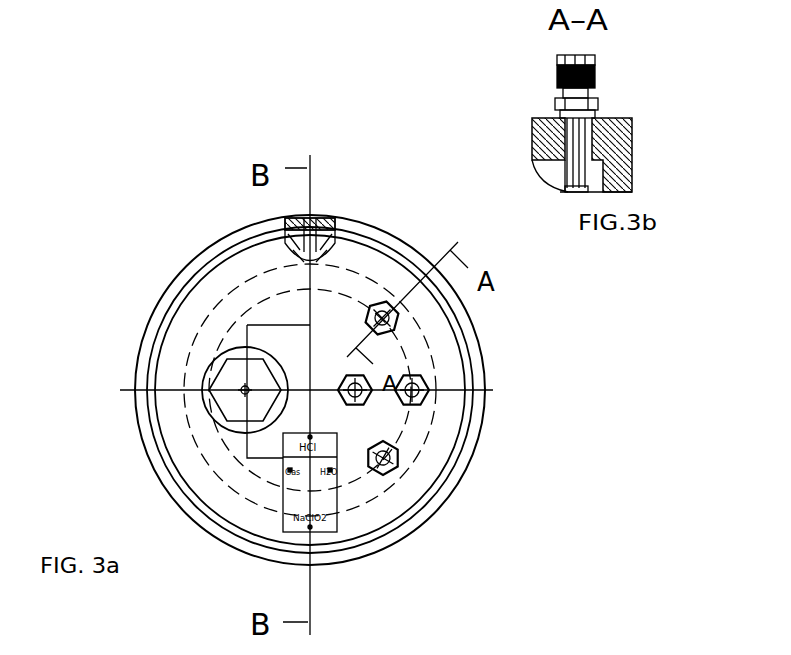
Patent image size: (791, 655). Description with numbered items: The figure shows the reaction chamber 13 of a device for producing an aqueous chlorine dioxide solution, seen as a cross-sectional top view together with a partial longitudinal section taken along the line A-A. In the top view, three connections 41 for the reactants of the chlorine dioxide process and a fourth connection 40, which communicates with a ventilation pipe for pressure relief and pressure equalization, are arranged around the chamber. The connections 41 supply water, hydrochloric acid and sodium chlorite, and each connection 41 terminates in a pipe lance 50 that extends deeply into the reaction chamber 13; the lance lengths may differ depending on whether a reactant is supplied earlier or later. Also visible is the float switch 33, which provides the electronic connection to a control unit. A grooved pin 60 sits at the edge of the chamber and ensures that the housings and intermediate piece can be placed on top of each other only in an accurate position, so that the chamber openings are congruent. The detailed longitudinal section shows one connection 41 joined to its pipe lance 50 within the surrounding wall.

In FIG. 3A, the reaction chamber 13 is at (336, 318).
In FIG. 3A, the float switch 33 is at (230, 375).
In FIG. 3A, the fourth connection 40 is at (366, 401).
In FIG. 3A, the connection 41 is at (394, 305).
In FIG. 3B, the connection 41 is at (597, 78).
In FIG. 3B, the pipe lance 50 is at (590, 172).
In FIG. 3A, the grooved pin 60 is at (317, 224).